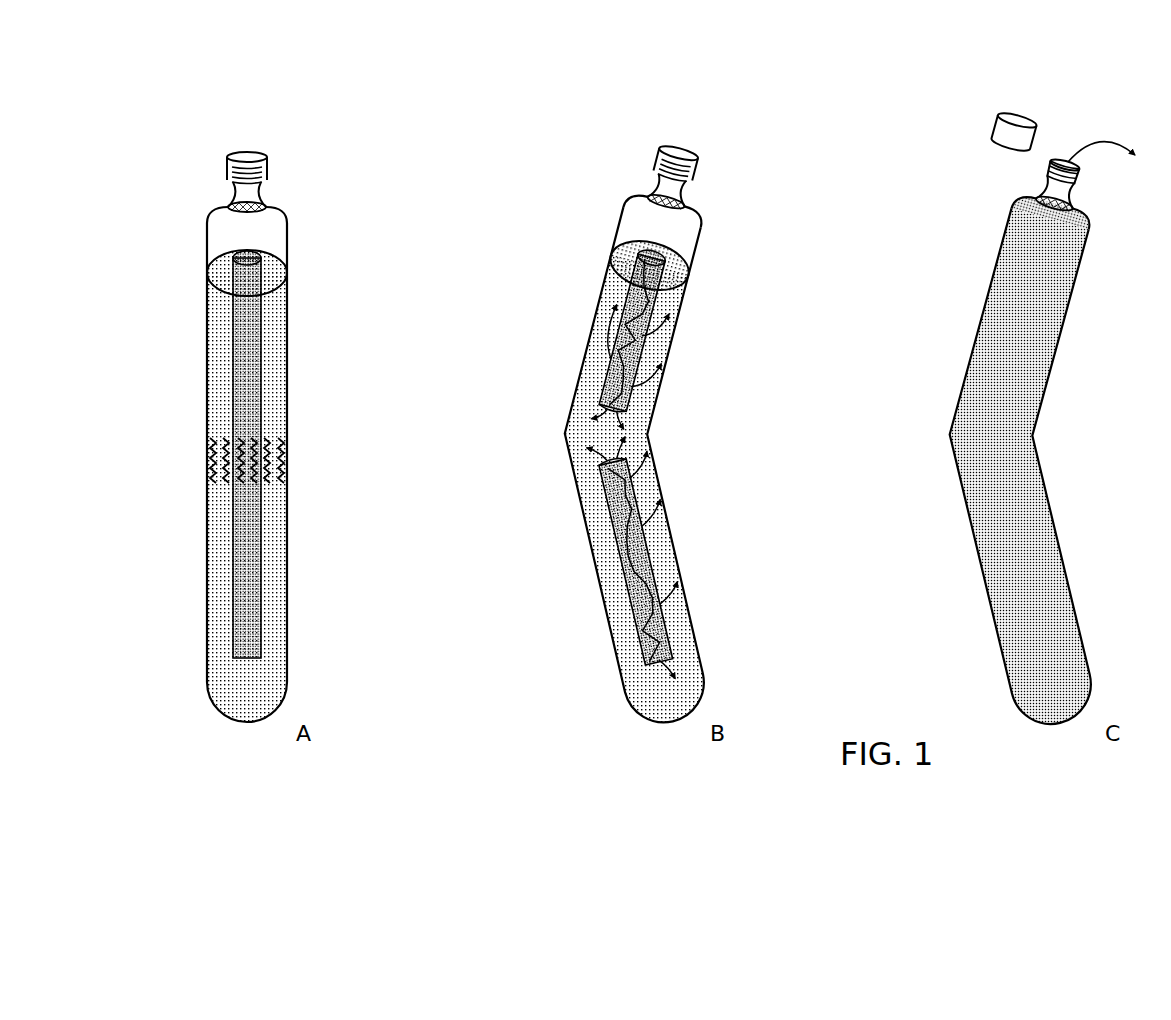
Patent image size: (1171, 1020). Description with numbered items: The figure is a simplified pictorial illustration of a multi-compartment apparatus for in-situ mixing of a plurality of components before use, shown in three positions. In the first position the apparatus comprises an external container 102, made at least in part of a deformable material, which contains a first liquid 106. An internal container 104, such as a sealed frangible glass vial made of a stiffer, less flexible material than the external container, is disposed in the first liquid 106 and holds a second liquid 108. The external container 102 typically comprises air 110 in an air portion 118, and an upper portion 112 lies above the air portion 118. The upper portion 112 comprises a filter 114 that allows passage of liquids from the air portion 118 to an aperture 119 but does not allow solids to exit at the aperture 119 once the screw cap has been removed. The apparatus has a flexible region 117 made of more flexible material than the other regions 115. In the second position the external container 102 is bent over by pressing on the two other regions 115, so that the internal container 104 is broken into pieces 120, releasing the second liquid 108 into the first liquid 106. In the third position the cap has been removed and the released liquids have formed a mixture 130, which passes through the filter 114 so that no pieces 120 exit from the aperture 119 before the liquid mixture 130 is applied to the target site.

The external container 102 is at (289, 371).
The internal container 104 is at (263, 329).
The first liquid 106 is at (283, 513).
The second liquid 108 is at (257, 542).
The air 110 is at (277, 237).
The upper portion 112 is at (265, 200).
The filter 114 is at (229, 205).
The other regions 115 is at (210, 312).
The flexible region 117 is at (285, 463).
The air portion 118 is at (206, 241).
The aperture 119 is at (250, 190).
The pieces 120 is at (605, 326).
The mixture 130 is at (1020, 478).